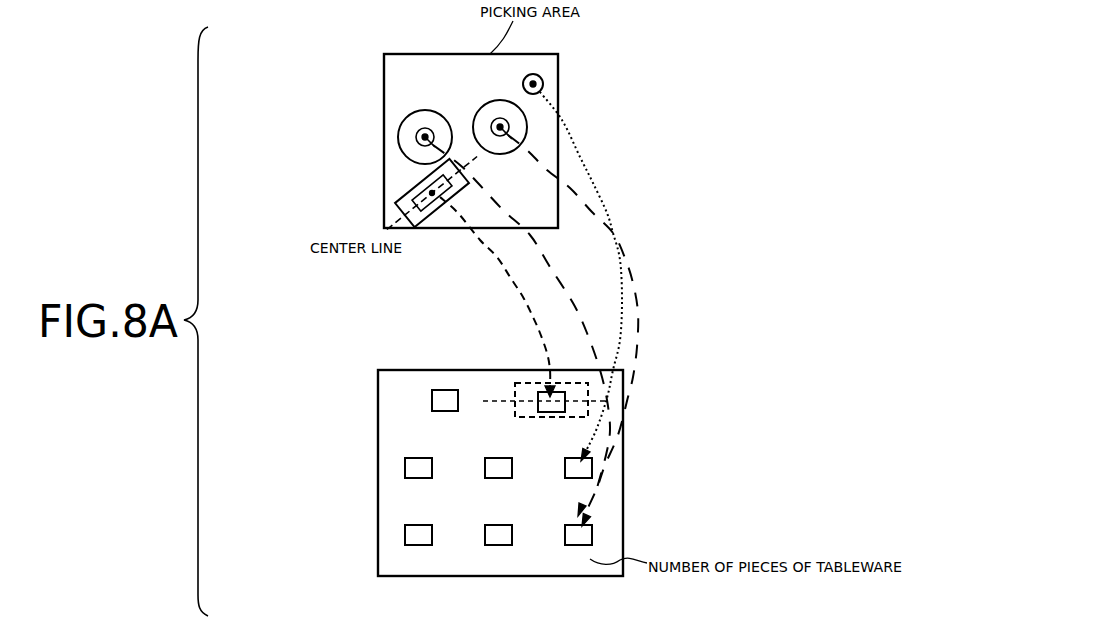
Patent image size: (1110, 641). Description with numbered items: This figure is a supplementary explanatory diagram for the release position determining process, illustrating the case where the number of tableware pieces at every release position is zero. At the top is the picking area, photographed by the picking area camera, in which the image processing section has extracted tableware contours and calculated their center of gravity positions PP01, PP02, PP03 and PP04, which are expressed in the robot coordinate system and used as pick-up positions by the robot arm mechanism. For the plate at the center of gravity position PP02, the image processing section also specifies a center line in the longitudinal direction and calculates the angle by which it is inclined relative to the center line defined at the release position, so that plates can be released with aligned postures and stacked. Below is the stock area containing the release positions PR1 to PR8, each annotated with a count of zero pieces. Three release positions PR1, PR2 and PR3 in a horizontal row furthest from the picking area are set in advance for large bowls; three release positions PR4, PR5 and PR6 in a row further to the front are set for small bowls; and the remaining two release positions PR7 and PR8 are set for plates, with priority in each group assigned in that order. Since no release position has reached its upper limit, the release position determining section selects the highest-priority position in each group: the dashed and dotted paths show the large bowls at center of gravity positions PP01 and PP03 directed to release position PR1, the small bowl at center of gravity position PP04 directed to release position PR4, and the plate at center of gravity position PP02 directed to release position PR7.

The center of gravity position PP01 is at (423, 136).
The center of gravity position PP02 is at (432, 193).
The center of gravity position PP03 is at (500, 127).
The center of gravity position PP04 is at (543, 84).
The release position PR1 is at (592, 536).
The release position PR2 is at (498, 536).
The release position PR3 is at (417, 536).
The release position PR4 is at (592, 467).
The release position PR5 is at (498, 469).
The release position PR6 is at (417, 469).
The release position PR7 is at (543, 390).
The release position PR8 is at (440, 390).